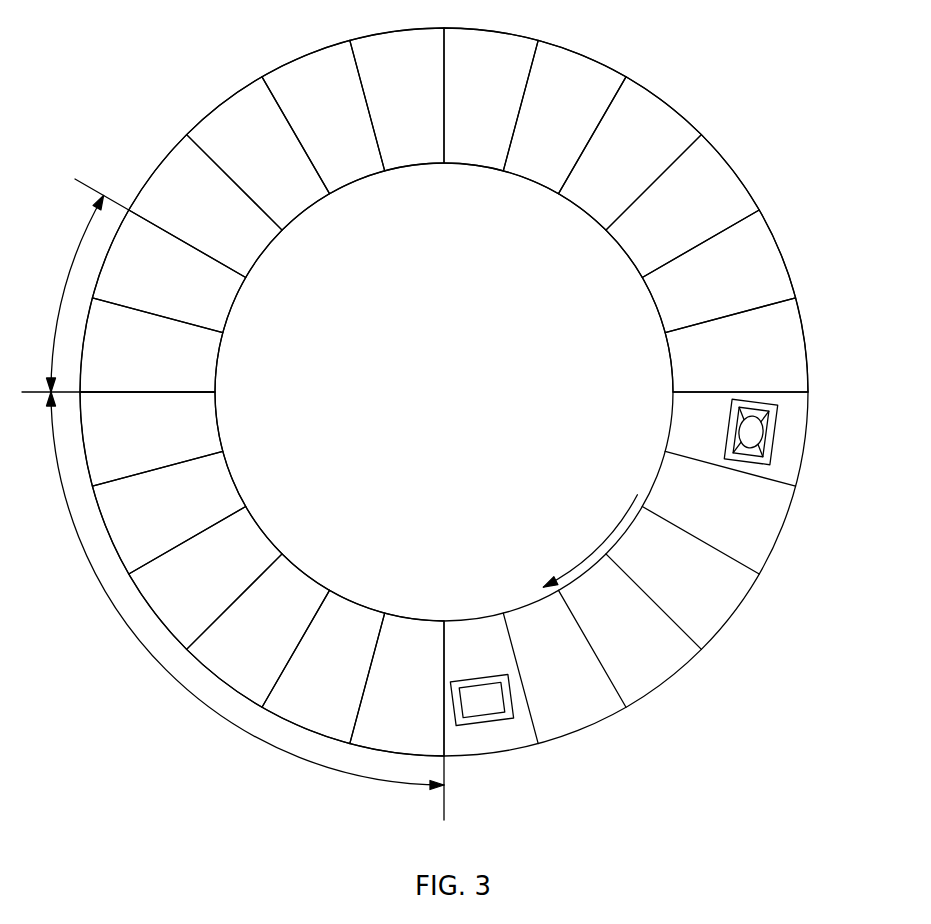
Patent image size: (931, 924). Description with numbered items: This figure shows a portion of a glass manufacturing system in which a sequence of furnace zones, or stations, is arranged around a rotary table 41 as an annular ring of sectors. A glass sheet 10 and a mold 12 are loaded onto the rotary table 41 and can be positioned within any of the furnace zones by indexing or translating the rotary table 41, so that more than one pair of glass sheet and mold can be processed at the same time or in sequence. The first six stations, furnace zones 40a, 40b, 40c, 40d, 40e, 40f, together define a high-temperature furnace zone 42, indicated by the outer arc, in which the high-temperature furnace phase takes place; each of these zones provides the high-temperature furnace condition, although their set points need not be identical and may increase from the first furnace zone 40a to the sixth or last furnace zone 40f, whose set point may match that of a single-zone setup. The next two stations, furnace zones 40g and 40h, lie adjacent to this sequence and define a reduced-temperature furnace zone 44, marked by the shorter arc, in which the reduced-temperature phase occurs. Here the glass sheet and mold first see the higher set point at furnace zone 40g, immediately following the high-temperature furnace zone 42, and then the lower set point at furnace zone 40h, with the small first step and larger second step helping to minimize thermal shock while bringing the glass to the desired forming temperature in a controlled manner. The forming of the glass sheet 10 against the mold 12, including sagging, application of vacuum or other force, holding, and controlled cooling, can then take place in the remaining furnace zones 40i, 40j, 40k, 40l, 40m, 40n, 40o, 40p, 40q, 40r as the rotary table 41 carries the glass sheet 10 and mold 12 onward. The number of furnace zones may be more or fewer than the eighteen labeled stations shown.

The glass sheet 10 is at (476, 680).
The mold 12 is at (478, 706).
The rotary table 41 is at (735, 612).
The high-temperature furnace zone 42 is at (246, 591).
The reduced-temperature furnace zone 44 is at (65, 294).
The furnace zone 40a is at (375, 693).
The furnace zone 40b is at (303, 675).
The furnace zone 40c is at (238, 640).
The furnace zone 40d is at (178, 585).
The furnace zone 40e is at (140, 518).
The furnace zone 40f is at (121, 435).
The furnace zone 40g is at (123, 365).
The furnace zone 40h is at (138, 288).
The furnace zone 40i is at (173, 220).
The furnace zone 40j is at (225, 160).
The furnace zone 40k is at (298, 115).
The furnace zone 40l is at (378, 88).
The furnace zone 40m is at (453, 88).
The furnace zone 40n is at (543, 108).
The furnace zone 40o is at (596, 162).
The furnace zone 40p is at (651, 220).
The furnace zone 40q is at (688, 282).
The furnace zone 40r is at (705, 362).